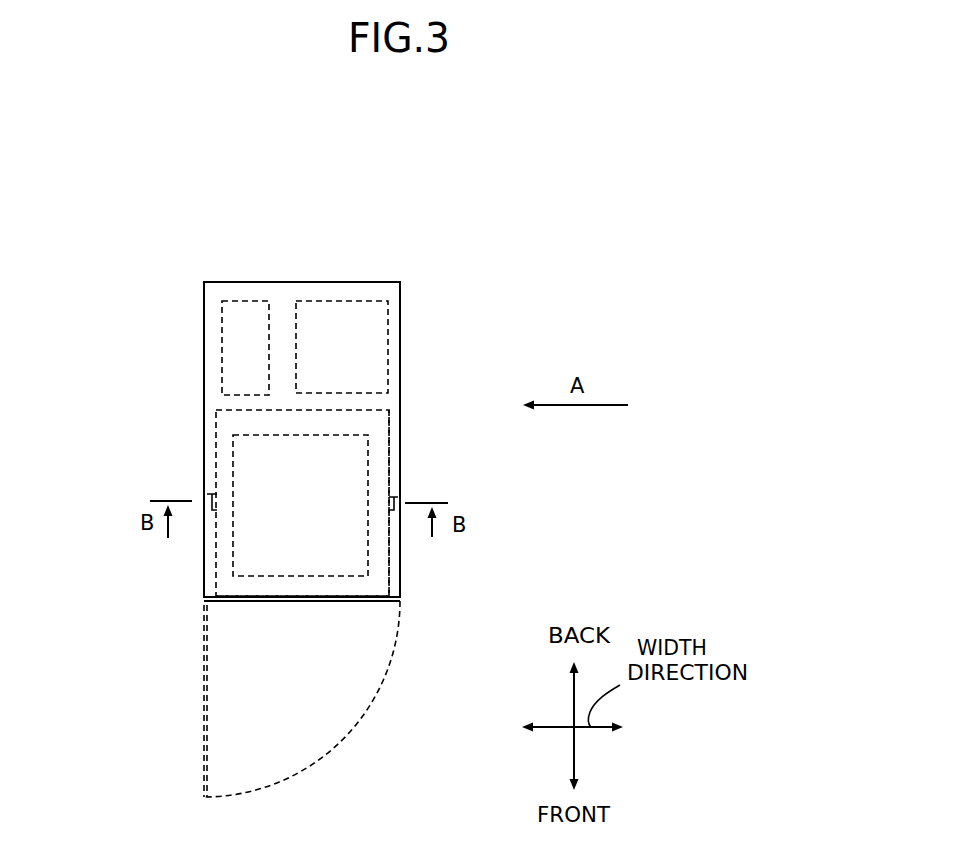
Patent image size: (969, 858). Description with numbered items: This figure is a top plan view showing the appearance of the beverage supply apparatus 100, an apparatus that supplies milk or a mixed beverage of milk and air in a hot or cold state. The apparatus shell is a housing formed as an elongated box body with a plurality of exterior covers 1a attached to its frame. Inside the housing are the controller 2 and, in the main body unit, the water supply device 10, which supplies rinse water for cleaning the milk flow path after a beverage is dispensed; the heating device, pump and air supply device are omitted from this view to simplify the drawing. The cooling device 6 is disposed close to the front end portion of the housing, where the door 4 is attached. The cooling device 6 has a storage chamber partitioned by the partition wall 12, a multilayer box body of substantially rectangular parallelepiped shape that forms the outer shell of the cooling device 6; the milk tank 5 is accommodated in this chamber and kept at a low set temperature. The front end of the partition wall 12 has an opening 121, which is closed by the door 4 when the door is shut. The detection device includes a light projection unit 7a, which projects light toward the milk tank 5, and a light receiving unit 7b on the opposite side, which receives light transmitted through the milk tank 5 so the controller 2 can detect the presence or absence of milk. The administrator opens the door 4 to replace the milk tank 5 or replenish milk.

The beverage supply apparatus 100 is at (136, 250).
The exterior cover 1a is at (204, 365).
The controller 2 is at (242, 300).
The water supply device 10 is at (318, 300).
The cooling device 6 is at (396, 418).
The partition wall 12 is at (388, 442).
The milk tank 5 is at (370, 477).
The light projection unit 7a is at (208, 494).
The light receiving unit 7b is at (398, 497).
The opening 121 is at (216, 585).
The door 4 is at (363, 602).